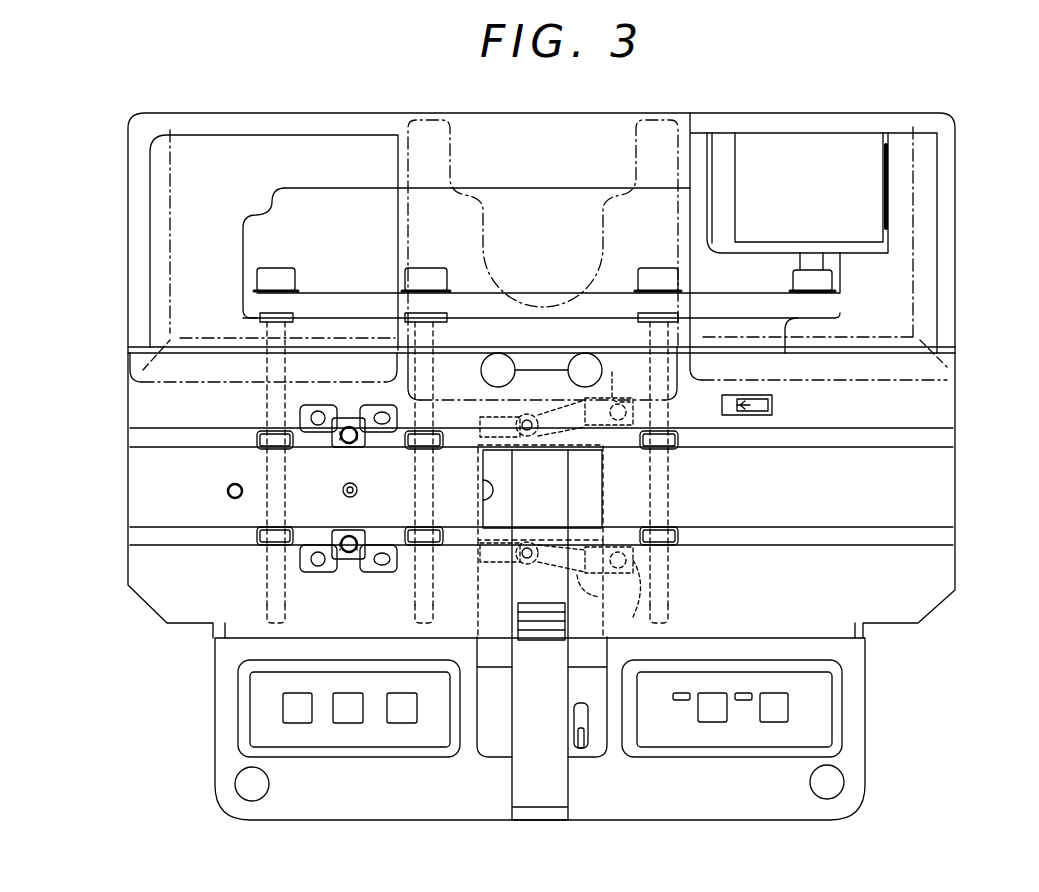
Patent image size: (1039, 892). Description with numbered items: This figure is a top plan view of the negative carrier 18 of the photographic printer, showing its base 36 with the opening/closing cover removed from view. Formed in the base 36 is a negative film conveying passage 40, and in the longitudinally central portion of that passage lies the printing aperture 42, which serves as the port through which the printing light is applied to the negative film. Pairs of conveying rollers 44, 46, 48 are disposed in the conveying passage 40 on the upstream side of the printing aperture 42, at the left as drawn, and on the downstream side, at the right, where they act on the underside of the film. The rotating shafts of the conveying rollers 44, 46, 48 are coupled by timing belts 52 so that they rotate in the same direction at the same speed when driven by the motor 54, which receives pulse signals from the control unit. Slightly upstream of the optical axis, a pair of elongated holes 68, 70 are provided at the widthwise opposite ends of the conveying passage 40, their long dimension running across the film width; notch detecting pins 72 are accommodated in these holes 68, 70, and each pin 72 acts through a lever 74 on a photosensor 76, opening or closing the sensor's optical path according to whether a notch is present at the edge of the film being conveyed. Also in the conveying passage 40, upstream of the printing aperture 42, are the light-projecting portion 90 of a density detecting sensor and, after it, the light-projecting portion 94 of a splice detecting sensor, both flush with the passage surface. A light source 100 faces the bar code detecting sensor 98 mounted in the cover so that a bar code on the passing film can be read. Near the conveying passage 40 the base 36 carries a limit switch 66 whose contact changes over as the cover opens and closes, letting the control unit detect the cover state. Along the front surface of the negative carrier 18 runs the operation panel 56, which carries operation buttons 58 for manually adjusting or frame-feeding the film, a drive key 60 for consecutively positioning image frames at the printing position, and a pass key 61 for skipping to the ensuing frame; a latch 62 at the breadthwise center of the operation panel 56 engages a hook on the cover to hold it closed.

The negative carrier 18 is at (783, 103).
The motor 54 is at (890, 170).
The timing belts 52 is at (347, 293).
The negative film conveying passage 40 is at (152, 428).
The conveying roller 44 is at (257, 542).
The conveying roller 46 is at (415, 450).
The conveying roller 48 is at (678, 450).
The bar code detecting sensor 98 is at (347, 405).
The light source 100 is at (346, 444).
The light-projecting portion of density detecting sensor 90 is at (228, 491).
The light-projecting portion of splice detecting sensor 94 is at (345, 497).
The lever 74 is at (561, 483).
The photosensor 76 is at (633, 498).
The printing aperture 42 is at (482, 497).
The notch detecting pins 72 is at (537, 433).
The elongated hole 68 is at (528, 437).
The elongated hole 70 is at (533, 547).
The latch 62 is at (543, 603).
The operation panel 56 is at (407, 788).
The limit switch 66 is at (775, 405).
The base 36 is at (865, 772).
The operation buttons 58 is at (297, 723).
The drive key 60 is at (712, 722).
The pass key 61 is at (775, 722).